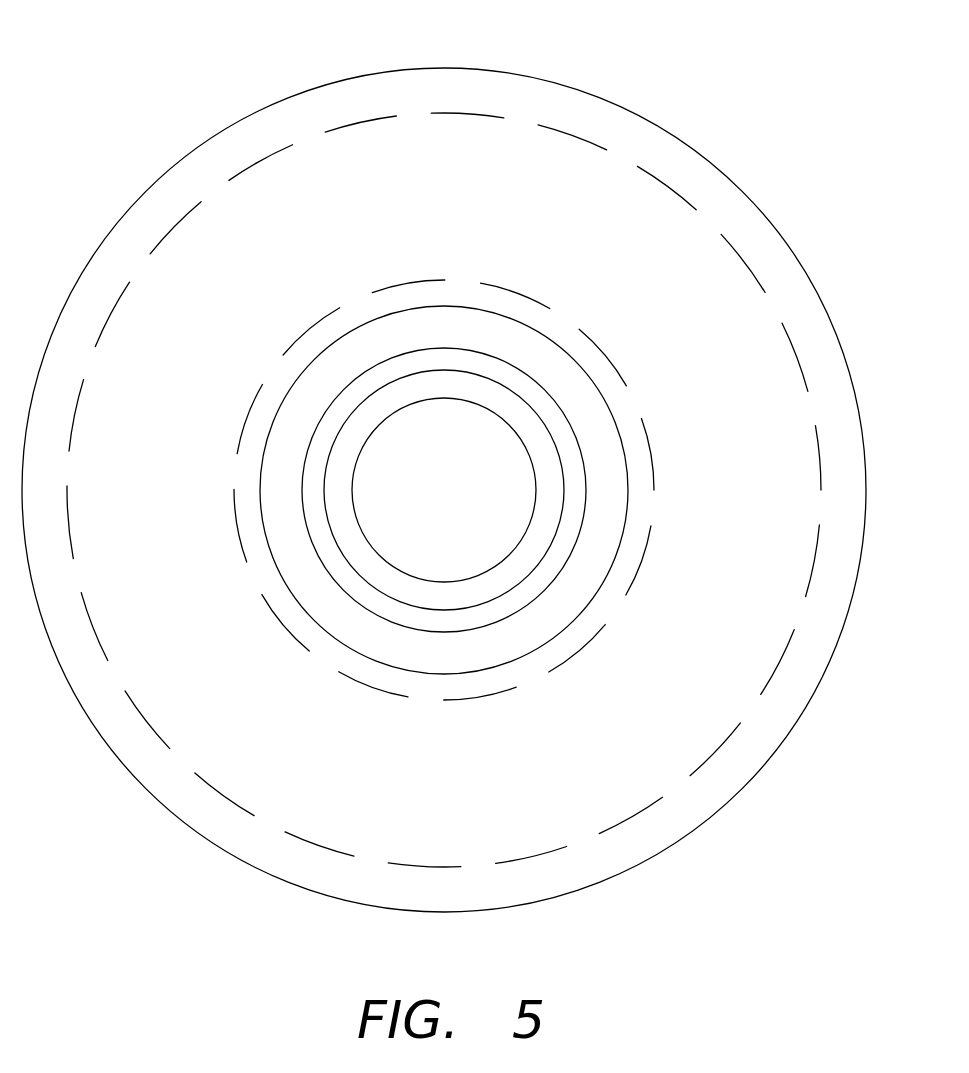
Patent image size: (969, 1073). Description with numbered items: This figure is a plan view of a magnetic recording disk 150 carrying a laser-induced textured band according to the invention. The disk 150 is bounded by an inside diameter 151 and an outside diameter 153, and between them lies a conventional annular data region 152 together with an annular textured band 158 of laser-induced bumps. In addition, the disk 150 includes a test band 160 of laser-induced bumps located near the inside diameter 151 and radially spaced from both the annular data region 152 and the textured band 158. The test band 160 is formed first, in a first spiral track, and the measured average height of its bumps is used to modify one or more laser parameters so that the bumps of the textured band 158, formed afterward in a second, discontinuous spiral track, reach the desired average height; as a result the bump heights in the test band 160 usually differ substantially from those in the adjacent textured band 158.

The disk 150 is at (226, 84).
The inside diameter 151 is at (508, 425).
The annular data region 152 is at (654, 437).
The outside diameter 153 is at (598, 93).
The annular textured band 158 is at (550, 388).
The test band 160 is at (525, 380).